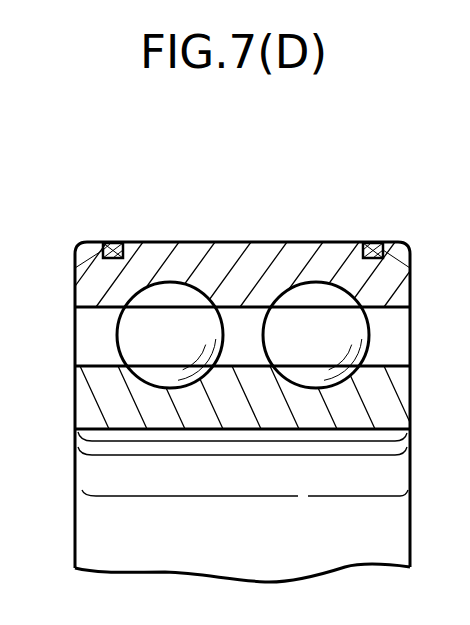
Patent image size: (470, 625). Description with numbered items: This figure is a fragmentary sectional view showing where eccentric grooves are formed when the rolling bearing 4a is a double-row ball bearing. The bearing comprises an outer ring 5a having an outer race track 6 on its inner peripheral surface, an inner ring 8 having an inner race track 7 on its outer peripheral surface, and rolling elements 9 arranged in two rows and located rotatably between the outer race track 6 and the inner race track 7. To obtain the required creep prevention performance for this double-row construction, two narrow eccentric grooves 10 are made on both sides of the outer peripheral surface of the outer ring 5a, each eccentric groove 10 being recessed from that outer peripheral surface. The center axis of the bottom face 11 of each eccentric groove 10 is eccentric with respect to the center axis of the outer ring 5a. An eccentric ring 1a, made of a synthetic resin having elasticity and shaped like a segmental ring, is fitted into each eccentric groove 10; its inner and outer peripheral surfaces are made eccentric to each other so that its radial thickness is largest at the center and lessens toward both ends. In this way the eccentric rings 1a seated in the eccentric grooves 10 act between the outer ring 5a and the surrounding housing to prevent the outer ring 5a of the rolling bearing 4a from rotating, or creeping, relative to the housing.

The eccentric ring 1a is at (115, 243).
The rolling bearing 4a is at (271, 231).
The outer ring 5a is at (224, 255).
The outer race track 6 is at (176, 284).
The inner race track 7 is at (168, 387).
The inner ring 8 is at (235, 425).
The rolling element 9 is at (125, 336).
The eccentric groove 10 is at (115, 247).
The bottom face 11 is at (100, 254).